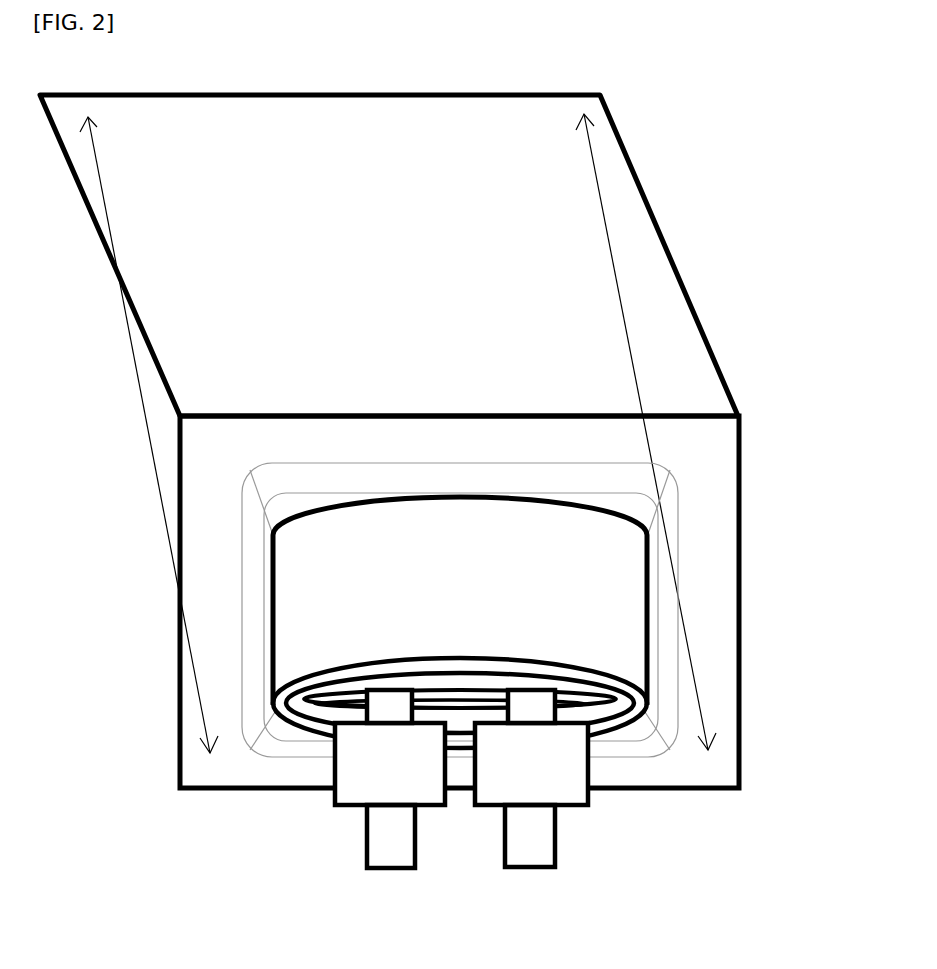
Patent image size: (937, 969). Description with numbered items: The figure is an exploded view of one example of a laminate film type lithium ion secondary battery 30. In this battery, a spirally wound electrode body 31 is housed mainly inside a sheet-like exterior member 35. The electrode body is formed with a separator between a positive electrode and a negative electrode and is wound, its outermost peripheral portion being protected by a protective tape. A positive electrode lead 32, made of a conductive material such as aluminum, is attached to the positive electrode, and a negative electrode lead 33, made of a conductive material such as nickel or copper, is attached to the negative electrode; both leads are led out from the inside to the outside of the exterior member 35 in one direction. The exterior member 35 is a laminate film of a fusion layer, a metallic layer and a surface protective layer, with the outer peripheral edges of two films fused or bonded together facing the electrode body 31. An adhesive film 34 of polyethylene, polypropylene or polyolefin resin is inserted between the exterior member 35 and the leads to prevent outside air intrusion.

The lithium ion secondary battery 30 is at (426, 412).
The spirally wound electrode body 31 is at (585, 585).
The positive electrode lead 32 is at (383, 847).
The negative electrode lead 33 is at (528, 845).
The adhesive film 34 is at (563, 772).
The exterior member 35 is at (487, 265).